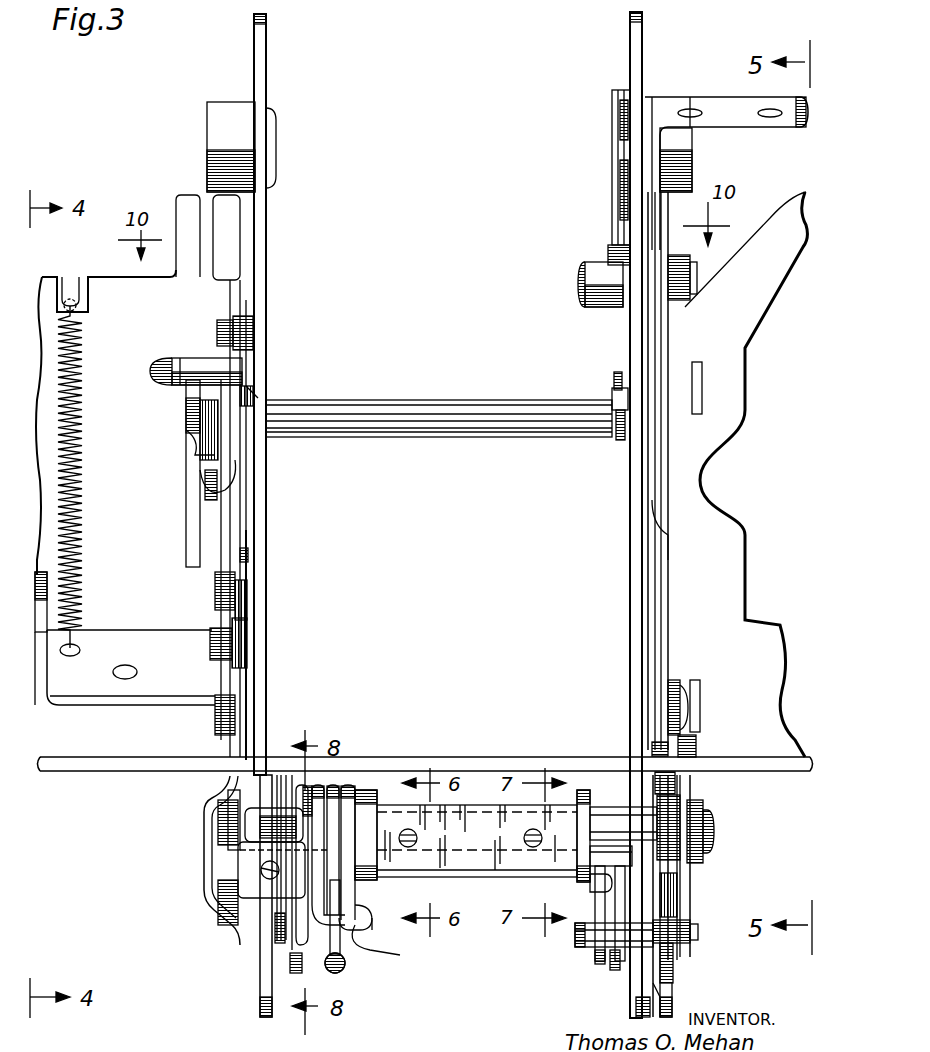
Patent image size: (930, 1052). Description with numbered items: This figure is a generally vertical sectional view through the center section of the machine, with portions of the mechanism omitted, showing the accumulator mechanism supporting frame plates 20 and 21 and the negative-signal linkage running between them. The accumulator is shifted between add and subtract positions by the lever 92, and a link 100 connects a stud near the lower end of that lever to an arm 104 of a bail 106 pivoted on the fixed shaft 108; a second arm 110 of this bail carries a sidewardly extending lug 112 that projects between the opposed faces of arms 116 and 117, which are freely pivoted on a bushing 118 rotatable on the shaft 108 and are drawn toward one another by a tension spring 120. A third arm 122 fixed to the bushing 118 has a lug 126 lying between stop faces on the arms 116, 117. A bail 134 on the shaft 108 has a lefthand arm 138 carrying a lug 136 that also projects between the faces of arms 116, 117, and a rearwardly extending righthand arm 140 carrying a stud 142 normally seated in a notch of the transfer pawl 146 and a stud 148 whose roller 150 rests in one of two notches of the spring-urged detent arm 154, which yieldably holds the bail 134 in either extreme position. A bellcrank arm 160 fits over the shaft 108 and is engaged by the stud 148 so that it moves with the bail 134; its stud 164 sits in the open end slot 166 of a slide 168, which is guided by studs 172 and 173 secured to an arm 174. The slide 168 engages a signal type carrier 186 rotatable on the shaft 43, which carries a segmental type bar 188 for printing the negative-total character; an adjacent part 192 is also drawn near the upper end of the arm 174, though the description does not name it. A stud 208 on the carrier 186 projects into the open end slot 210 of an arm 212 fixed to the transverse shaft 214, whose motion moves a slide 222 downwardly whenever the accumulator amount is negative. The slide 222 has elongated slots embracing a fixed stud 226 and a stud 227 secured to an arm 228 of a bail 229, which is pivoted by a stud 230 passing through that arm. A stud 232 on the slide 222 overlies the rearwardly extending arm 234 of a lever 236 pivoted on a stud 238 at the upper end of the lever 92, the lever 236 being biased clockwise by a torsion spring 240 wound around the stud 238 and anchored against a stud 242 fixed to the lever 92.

The frame plate 20 is at (634, 62).
The frame plate 21 is at (266, 72).
The shaft 43 is at (595, 278).
The lever 92 is at (249, 548).
The link 100 is at (204, 800).
The arm 104 is at (237, 933).
The bail 106 is at (250, 876).
The fixed shaft 108 is at (270, 825).
The second arm 110 is at (262, 943).
The lug 112 is at (300, 950).
The arm 116 is at (345, 885).
The arm 117 is at (318, 790).
The bushing 118 is at (333, 790).
The tension spring 120 is at (345, 962).
The third arm 122 is at (308, 786).
The lug 126 is at (350, 930).
The bail 134 is at (510, 858).
The lug 136 is at (355, 925).
The lefthand arm 138 is at (366, 790).
The righthand arm 140 is at (575, 790).
The stud 142 is at (597, 892).
The transfer pawl 146 is at (592, 858).
The stud 148 is at (600, 958).
The roller 150 is at (665, 930).
The detent arm 154 is at (665, 972).
The bellcrank arm 160 is at (680, 888).
The stud 164 is at (656, 757).
The open end slot 166 is at (696, 742).
The slide 168 is at (680, 455).
The stud 172 is at (680, 704).
The stud 173 is at (678, 515).
The arm 174 is at (660, 185).
The signal type carrier 186 is at (625, 260).
The segmental type bar 188 is at (612, 106).
The pin 192 is at (690, 270).
The stud 208 is at (612, 392).
The open end slot 210 is at (612, 420).
The arm 212 is at (610, 390).
The shaft 214 is at (400, 400).
The slide 222 is at (237, 238).
The fixed stud 226 is at (218, 330).
The stud 227 is at (248, 556).
The arm 228 is at (225, 592).
The bail 229 is at (118, 630).
The stud 230 is at (212, 640).
The stud 232 is at (186, 365).
The arm 234 is at (192, 413).
The lever 236 is at (214, 518).
The stud 238 is at (205, 425).
The torsion spring 240 is at (220, 470).
The stud 242 is at (258, 396).